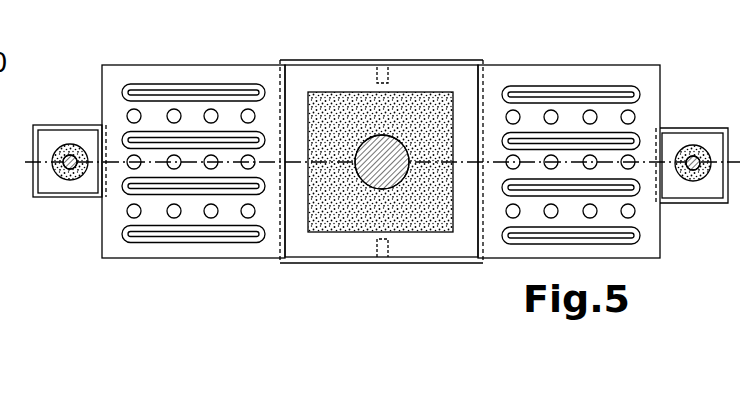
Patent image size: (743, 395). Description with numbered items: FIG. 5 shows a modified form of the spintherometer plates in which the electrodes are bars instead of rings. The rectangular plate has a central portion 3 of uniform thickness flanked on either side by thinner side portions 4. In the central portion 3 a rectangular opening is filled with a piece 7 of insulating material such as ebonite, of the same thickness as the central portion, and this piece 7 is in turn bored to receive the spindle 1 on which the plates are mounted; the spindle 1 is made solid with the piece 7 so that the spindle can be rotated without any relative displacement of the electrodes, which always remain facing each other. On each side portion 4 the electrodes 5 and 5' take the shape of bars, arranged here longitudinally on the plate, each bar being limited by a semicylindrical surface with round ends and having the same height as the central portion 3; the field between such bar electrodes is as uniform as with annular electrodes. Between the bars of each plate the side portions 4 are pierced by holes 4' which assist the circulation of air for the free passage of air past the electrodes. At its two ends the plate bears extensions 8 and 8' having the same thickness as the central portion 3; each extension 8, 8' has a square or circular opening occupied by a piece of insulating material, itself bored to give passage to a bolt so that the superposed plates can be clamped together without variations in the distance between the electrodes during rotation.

The spindle 1 is at (393, 183).
The central portion 3 is at (427, 77).
The side portions 4 is at (365, 183).
The holes 4' is at (395, 161).
The electrodes 5 is at (193, 135).
The electrodes 5' is at (571, 136).
The piece of insulating material 7 is at (322, 228).
The extension 8 is at (69, 144).
The extension 8' is at (692, 147).